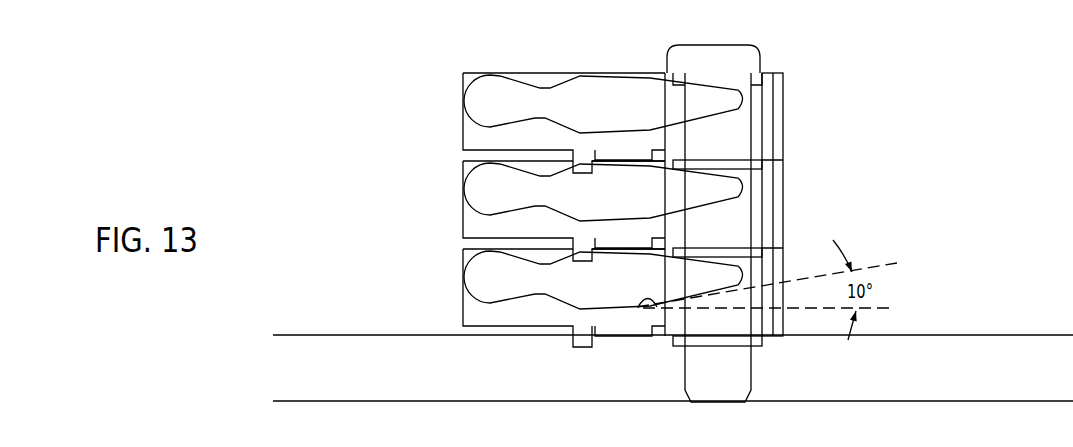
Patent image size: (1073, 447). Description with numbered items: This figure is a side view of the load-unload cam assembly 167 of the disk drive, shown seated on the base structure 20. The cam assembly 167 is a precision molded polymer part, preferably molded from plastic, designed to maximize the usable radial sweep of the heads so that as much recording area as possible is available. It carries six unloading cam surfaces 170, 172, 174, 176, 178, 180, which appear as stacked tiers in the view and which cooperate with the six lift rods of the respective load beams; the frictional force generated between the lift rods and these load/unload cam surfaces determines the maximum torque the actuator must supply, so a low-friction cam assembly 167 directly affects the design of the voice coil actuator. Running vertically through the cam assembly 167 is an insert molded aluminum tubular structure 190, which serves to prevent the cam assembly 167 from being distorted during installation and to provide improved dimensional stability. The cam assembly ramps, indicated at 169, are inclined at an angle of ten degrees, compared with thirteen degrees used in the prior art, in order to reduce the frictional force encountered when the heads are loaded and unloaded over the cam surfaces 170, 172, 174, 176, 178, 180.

The base structure 20 is at (956, 346).
The load-unload cam assembly 167 is at (560, 210).
The cam assembly ramps 169 is at (667, 262).
The unloading cam surface 170 is at (615, 308).
The unloading cam surface 172 is at (603, 250).
The unloading cam surface 174 is at (613, 220).
The unloading cam surface 176 is at (612, 162).
The unloading cam surface 178 is at (603, 133).
The unloading cam surface 180 is at (603, 74).
The insert molded aluminum tubular structure 190 is at (769, 100).